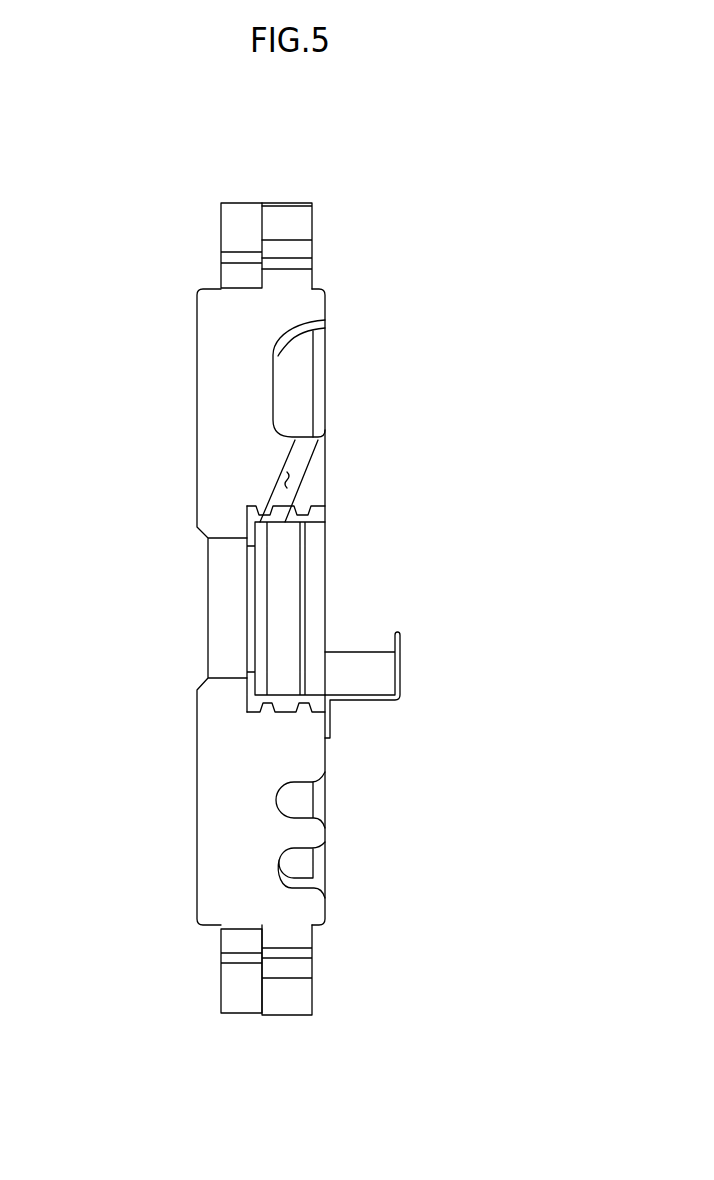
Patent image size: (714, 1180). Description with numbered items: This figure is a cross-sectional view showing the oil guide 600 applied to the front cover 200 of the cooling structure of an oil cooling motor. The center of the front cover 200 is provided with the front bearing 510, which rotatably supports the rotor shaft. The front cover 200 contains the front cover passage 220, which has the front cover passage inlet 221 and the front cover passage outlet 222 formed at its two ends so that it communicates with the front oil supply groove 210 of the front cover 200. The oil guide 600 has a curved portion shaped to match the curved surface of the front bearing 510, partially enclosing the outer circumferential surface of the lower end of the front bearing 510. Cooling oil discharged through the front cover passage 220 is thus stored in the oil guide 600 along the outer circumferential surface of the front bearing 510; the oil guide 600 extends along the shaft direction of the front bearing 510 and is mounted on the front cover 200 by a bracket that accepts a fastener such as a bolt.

The front cover 200 is at (362, 278).
The front oil supply groove 210 is at (293, 378).
The front cover passage inlet 221 is at (308, 435).
The front cover passage outlet 222 is at (277, 505).
The front cover passage 220 is at (388, 613).
The front bearing 510 is at (285, 703).
The oil guide 600 is at (405, 660).